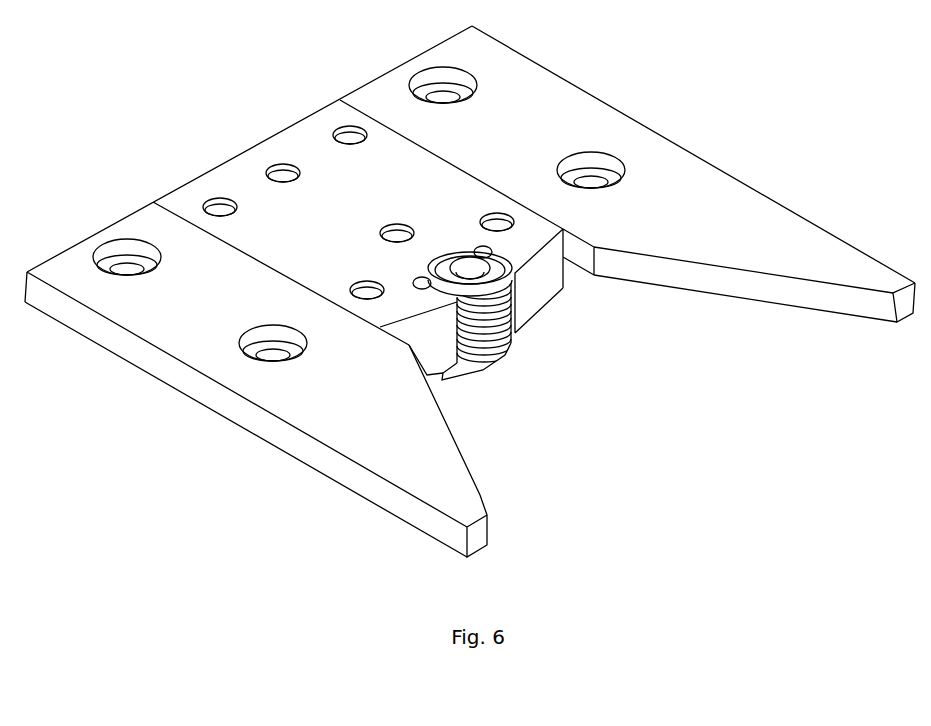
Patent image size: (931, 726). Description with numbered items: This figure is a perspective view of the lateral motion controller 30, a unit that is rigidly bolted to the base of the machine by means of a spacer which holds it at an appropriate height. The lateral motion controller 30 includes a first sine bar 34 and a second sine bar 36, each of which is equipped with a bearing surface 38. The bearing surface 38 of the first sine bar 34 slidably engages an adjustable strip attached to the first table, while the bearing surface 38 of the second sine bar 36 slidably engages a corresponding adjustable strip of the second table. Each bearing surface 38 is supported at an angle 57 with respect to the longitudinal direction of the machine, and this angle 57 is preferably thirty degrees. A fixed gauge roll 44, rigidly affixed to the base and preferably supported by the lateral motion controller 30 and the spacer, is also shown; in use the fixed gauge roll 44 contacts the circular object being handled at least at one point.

The lateral motion controller 30 is at (470, 304).
The first sine bar 34 is at (338, 427).
The second sine bar 36 is at (705, 197).
The bearing surface 38 is at (732, 283).
The fixed gauge roll 44 is at (510, 330).
The angle 57 is at (787, 210).